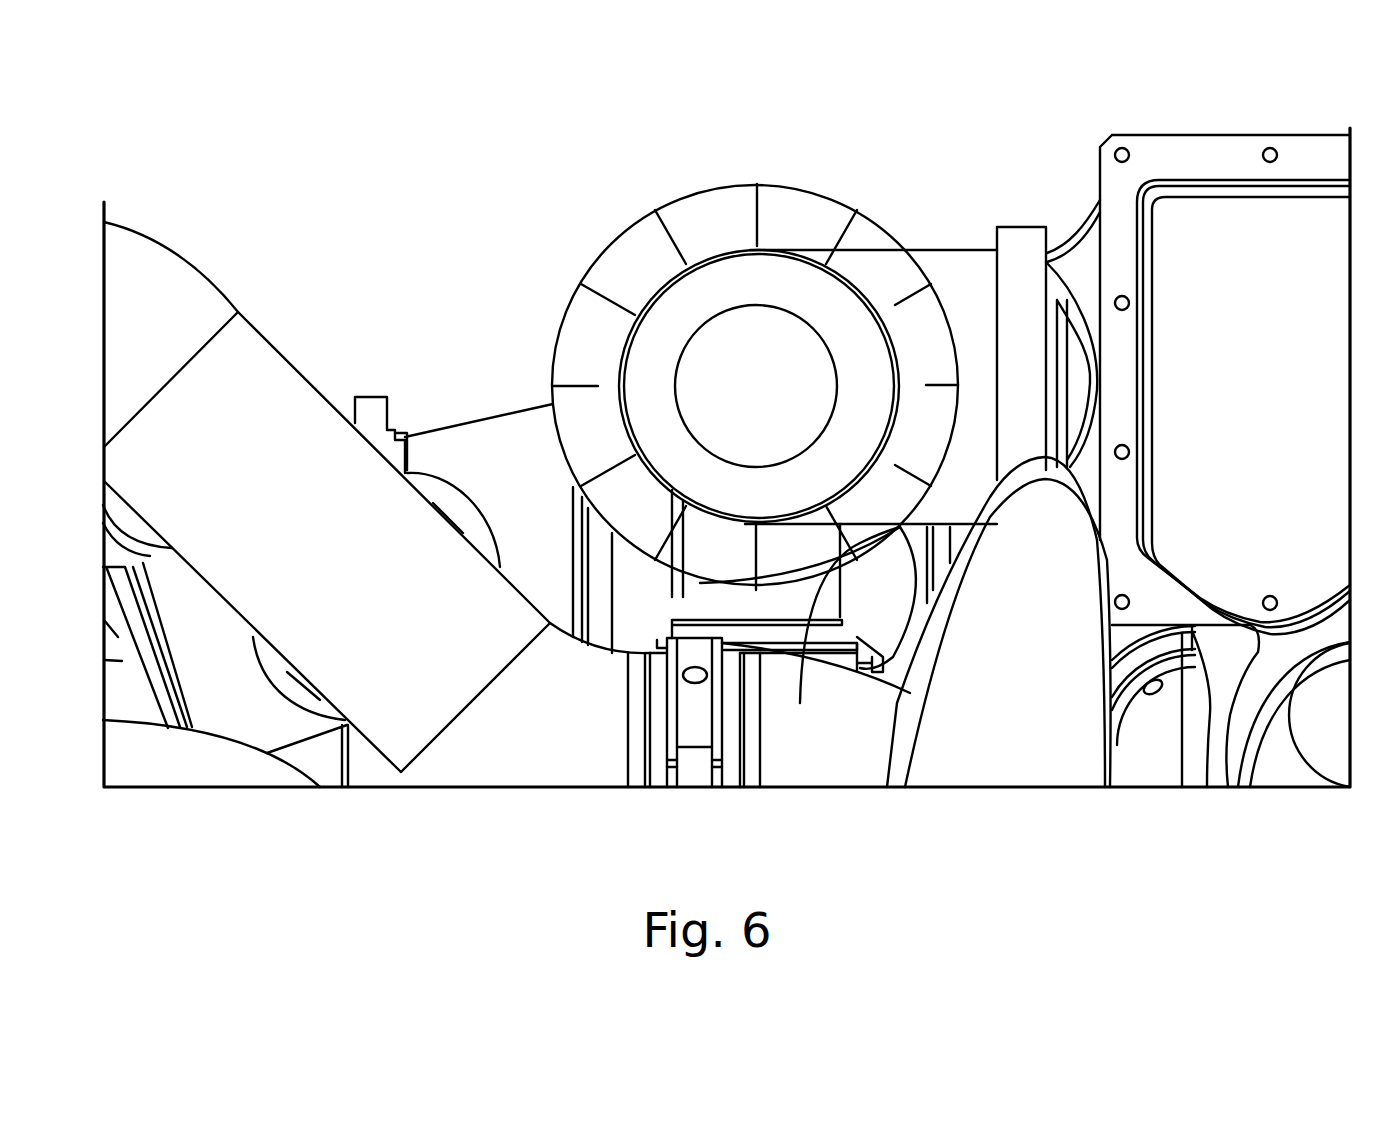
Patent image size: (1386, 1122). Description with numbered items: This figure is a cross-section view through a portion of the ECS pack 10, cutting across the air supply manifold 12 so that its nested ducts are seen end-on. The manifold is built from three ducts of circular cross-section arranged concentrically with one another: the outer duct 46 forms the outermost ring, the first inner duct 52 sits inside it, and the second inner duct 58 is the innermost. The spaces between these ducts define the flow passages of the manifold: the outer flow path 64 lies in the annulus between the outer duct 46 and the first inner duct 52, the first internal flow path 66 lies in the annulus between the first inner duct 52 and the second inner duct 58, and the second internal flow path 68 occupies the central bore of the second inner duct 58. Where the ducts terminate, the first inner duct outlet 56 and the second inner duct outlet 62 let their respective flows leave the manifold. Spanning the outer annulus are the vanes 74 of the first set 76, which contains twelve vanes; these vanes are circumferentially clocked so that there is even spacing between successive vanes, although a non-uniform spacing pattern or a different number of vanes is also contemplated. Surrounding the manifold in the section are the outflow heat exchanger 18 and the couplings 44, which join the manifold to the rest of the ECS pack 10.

The ECS pack 10 is at (300, 162).
The air supply manifold 12 is at (717, 187).
The outflow heat exchanger 18 is at (1257, 307).
The couplings 44 is at (1028, 227).
The outer duct 46 is at (590, 256).
The first inner duct 52 is at (656, 276).
The first inner duct outlet 56 is at (955, 250).
The second inner duct 58 is at (677, 355).
The second inner duct outlet 62 is at (700, 607).
The outer flow path 64 is at (605, 511).
The first internal flow path 66 is at (742, 501).
The second internal flow path 68 is at (742, 395).
The vanes 74 is at (757, 207).
The first set of vanes 76 is at (750, 562).